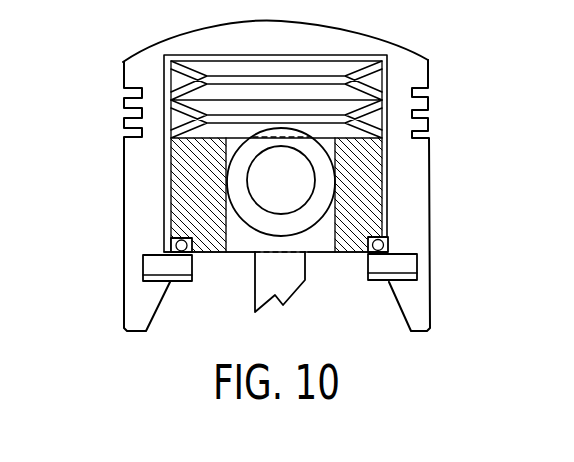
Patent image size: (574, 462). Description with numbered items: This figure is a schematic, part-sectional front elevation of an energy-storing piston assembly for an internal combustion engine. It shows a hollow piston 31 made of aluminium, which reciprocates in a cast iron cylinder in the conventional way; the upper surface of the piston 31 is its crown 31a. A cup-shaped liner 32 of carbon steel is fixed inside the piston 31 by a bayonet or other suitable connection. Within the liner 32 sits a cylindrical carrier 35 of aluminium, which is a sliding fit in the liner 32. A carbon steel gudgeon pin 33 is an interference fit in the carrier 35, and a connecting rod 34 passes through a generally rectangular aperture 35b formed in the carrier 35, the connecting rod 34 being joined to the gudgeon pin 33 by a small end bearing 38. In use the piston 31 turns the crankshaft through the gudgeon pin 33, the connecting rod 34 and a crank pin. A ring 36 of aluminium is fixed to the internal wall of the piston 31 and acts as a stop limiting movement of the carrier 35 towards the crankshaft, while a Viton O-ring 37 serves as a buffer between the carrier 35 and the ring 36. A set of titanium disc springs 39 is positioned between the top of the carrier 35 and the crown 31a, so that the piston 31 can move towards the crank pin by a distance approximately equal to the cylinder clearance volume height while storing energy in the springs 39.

The hollow piston 31 is at (158, 182).
The crown 31a is at (281, 52).
The cup-shaped liner 32 is at (163, 97).
The gudgeon pin 33 is at (291, 192).
The connecting rod 34 is at (297, 282).
The cylindrical carrier 35 is at (188, 199).
The rectangular aperture 35b is at (236, 240).
The ring 36 is at (152, 270).
The O-ring 37 is at (172, 247).
The small end bearing 38 is at (177, 138).
The set of disc springs 39 is at (172, 118).